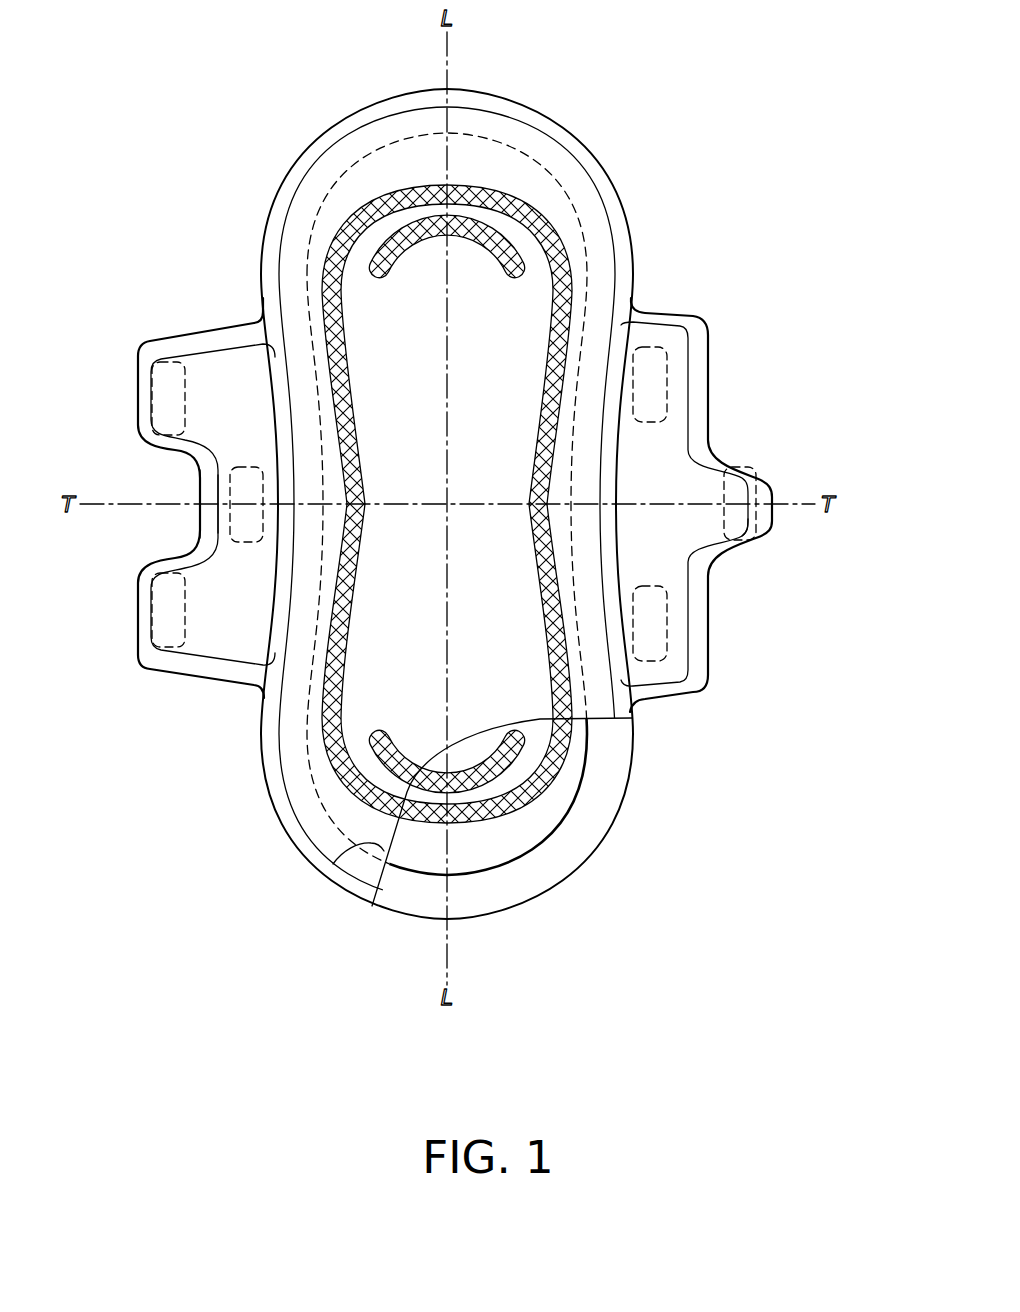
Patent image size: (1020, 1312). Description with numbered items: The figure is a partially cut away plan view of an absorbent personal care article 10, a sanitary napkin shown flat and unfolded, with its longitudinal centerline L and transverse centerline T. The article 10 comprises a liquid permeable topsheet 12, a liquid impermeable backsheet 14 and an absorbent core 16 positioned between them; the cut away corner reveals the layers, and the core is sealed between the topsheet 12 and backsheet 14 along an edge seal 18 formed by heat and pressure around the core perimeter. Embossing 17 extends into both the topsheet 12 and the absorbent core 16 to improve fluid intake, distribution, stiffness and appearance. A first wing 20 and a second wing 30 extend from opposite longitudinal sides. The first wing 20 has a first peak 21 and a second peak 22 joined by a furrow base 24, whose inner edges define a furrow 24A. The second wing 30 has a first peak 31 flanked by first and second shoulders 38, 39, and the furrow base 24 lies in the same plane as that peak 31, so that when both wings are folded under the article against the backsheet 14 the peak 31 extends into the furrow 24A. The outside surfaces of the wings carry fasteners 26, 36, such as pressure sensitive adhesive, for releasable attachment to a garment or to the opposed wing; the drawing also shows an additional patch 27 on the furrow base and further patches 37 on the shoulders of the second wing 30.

The absorbent personal care article 10 is at (583, 88).
The liquid permeable topsheet 12 is at (360, 848).
The liquid impermeable backsheet 14 is at (477, 887).
The absorbent core 16 is at (510, 842).
The embossing 17 is at (393, 198).
The edge seal 18 is at (588, 140).
The first wing 20 is at (130, 402).
The first peak 21 is at (147, 350).
The second peak 22 is at (140, 605).
The furrow base 24 is at (200, 521).
The furrow 24A is at (138, 498).
The fasteners 26 is at (181, 372).
The notch adhesive patch 27 is at (243, 480).
The second wing 30 is at (743, 438).
The first peak 31 is at (772, 484).
The fasteners 36 is at (746, 545).
The second wing adhesive patches 37 is at (650, 352).
The first shoulder 38 is at (708, 350).
The second shoulder 39 is at (708, 634).